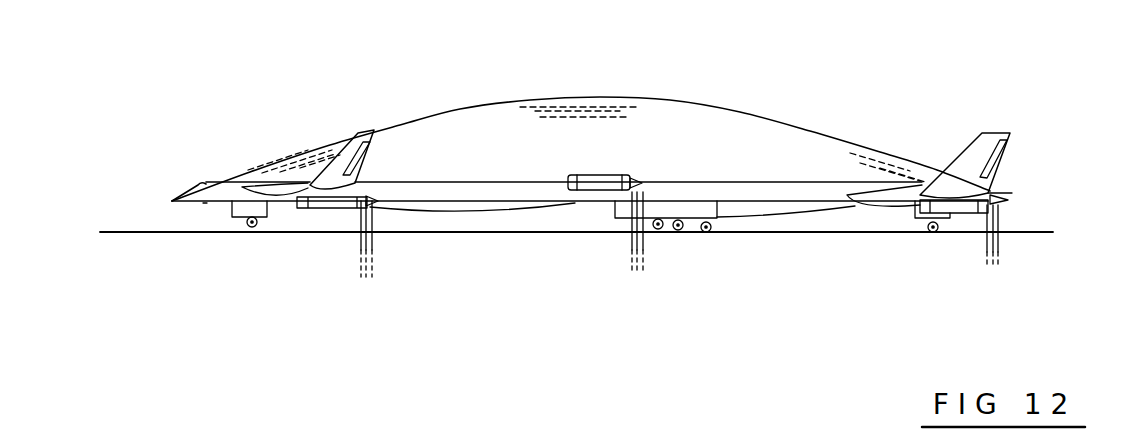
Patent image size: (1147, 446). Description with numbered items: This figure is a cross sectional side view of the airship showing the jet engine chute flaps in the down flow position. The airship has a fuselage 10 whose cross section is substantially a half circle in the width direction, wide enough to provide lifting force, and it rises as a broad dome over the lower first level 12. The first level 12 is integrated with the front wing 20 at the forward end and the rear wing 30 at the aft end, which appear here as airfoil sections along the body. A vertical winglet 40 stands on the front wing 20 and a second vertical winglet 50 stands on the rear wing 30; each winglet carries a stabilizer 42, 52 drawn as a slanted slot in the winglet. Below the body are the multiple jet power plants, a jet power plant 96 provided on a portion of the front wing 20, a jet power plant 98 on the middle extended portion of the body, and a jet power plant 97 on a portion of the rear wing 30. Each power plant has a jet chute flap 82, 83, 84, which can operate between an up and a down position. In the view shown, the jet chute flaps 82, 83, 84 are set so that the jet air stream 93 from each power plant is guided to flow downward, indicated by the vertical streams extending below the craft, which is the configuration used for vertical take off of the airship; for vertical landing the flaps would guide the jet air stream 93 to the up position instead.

The fuselage 10 is at (600, 98).
The first level 12 is at (483, 190).
The front wing 20 is at (283, 192).
The rear wing 30 is at (893, 197).
The vertical winglet 40 is at (350, 152).
The stabilizer 42 is at (375, 155).
The vertical winglet 50 is at (967, 160).
The stabilizer 52 is at (1000, 157).
The jet chute flap 82 is at (370, 200).
The jet chute flap 83 is at (640, 182).
The jet chute flap 84 is at (1010, 198).
The jet air stream 93 is at (372, 238).
The jet power plant 96 is at (324, 198).
The jet power plant 97 is at (958, 212).
The jet power plant 98 is at (598, 192).